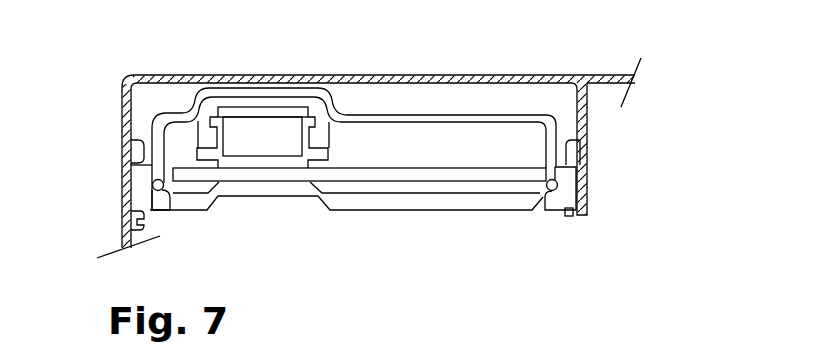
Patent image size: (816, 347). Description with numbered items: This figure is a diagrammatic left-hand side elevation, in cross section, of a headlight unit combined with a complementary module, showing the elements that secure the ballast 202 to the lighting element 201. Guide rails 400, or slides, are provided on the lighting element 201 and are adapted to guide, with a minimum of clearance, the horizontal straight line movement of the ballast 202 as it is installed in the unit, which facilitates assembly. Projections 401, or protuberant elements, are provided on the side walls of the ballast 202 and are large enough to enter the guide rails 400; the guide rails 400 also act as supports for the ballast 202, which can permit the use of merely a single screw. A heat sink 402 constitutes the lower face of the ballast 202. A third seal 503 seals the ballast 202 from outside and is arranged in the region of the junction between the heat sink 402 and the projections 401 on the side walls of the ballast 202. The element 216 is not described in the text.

The lighting element 201 is at (452, 80).
The ballast 202 is at (467, 146).
The panel holding member 216 is at (370, 173).
The guide rails 400 is at (133, 147).
The projections 401 is at (140, 190).
The heat sink 402 is at (357, 203).
The third seal 503 is at (162, 191).